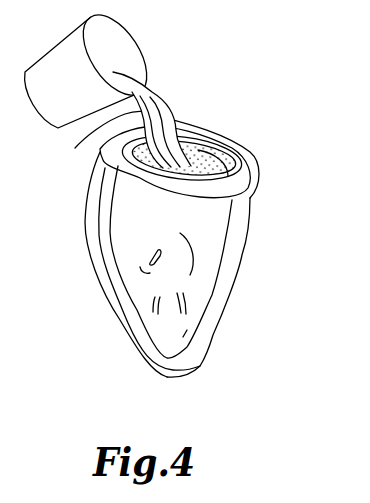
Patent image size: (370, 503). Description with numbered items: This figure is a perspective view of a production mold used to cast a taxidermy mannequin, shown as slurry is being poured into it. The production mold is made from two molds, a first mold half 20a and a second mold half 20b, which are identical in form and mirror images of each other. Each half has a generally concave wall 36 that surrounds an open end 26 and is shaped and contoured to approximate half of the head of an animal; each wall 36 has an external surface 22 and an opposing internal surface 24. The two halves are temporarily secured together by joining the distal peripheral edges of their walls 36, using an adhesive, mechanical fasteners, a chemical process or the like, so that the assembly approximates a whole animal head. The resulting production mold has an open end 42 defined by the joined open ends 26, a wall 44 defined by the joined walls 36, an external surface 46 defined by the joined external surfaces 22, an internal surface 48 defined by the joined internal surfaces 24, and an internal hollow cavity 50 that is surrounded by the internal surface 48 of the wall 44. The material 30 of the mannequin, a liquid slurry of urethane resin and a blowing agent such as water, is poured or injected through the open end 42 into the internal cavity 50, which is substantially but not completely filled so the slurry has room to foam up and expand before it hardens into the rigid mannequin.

The first mold half 20a is at (228, 277).
The second mold half 20b is at (88, 193).
The external surface 22 is at (215, 227).
The internal surface 24 is at (100, 167).
The open end 26 is at (183, 138).
The material of the taxidermy mannequin 30 is at (75, 148).
The wall 36 is at (85, 233).
The open end of the production mold 42 is at (170, 117).
The wall of the production mold 44 is at (110, 262).
The external surface of the production mold 46 is at (150, 302).
The internal surface of the production mold 48 is at (208, 157).
The internal hollow cavity of the production mold 50 is at (218, 168).